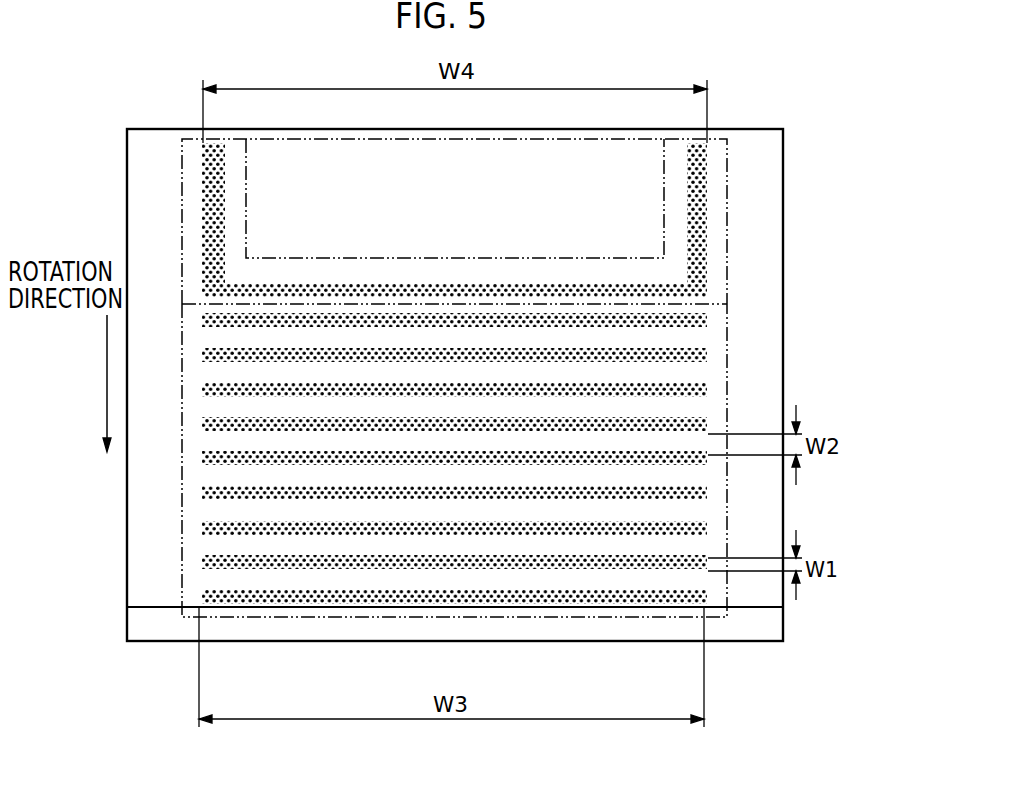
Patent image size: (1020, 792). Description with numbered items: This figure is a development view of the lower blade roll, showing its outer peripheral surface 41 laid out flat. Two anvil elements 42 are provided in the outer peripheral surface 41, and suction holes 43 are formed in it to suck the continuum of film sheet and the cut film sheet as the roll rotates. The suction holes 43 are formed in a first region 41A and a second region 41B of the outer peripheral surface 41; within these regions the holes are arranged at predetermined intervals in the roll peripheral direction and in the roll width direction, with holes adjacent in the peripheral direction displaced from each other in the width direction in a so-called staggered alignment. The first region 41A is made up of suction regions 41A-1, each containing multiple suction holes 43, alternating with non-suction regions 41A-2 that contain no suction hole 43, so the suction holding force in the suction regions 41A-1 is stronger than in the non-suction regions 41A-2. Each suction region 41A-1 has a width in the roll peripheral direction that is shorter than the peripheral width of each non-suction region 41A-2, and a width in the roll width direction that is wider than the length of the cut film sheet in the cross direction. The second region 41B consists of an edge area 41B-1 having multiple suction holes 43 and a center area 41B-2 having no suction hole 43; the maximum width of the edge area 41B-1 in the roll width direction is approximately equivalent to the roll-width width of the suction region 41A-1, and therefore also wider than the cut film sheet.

The outer peripheral surface 41 is at (755, 82).
The first region 41A is at (182, 531).
The suction region 41A-1 is at (710, 500).
The non-suction region 41A-2 is at (698, 340).
The second region 41B is at (182, 216).
The edge area 41B-1 is at (723, 198).
The center area 41B-2 is at (463, 150).
The anvil element 42 is at (629, 633).
The suction hole 43 is at (700, 248).